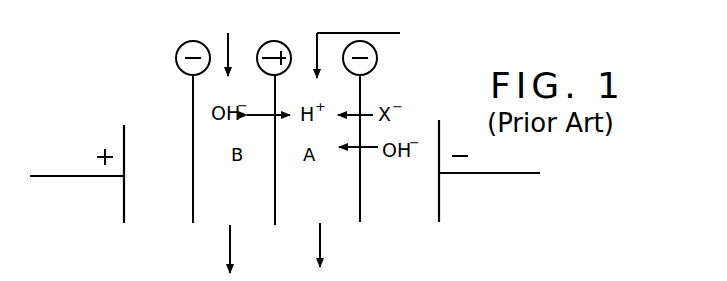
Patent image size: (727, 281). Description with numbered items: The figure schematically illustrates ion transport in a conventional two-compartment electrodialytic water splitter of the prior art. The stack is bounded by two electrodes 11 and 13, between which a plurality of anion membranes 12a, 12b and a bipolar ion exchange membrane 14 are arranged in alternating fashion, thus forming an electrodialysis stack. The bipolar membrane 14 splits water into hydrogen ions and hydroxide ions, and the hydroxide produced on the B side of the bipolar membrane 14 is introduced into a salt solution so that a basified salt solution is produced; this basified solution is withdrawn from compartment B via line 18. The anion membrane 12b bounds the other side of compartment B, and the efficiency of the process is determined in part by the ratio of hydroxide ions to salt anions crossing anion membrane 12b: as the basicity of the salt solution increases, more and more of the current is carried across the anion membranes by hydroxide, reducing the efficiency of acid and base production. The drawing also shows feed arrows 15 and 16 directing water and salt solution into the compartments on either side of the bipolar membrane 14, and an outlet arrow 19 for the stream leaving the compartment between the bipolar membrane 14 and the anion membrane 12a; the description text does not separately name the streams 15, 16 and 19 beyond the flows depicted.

The electrode 11 is at (92, 177).
The anion membrane 12a is at (361, 205).
The anion membrane 12b is at (193, 208).
The electrode 13 is at (496, 175).
The bipolar ion exchange membrane 14 is at (277, 207).
The water feed to compartment A 15 is at (317, 52).
The feed to compartment B 16 is at (228, 48).
The line 18 is at (229, 245).
The outlet from compartment A 19 is at (321, 240).